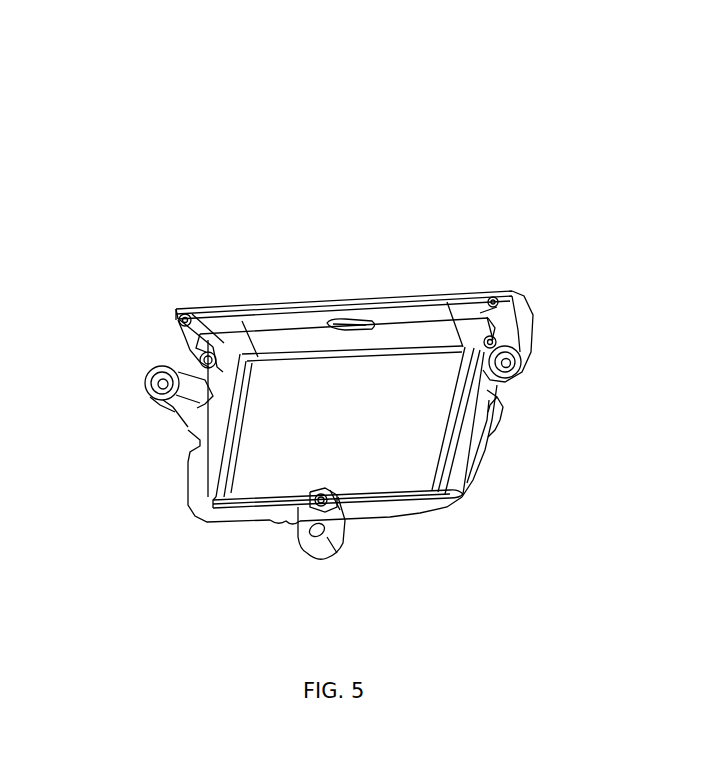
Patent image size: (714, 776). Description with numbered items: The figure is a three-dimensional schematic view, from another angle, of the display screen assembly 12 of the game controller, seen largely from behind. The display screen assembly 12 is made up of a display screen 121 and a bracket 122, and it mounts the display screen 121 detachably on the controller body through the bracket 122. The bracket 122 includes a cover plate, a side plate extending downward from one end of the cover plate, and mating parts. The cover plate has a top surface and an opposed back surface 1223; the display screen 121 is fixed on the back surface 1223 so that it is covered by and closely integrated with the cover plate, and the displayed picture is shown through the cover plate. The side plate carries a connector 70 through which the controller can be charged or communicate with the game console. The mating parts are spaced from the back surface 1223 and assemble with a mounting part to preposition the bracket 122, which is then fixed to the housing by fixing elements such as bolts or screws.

The display screen assembly 12 is at (266, 153).
The connector 70 is at (340, 322).
The display screen 121 is at (412, 478).
The bracket 122 is at (227, 520).
The back surface 1223 is at (480, 433).